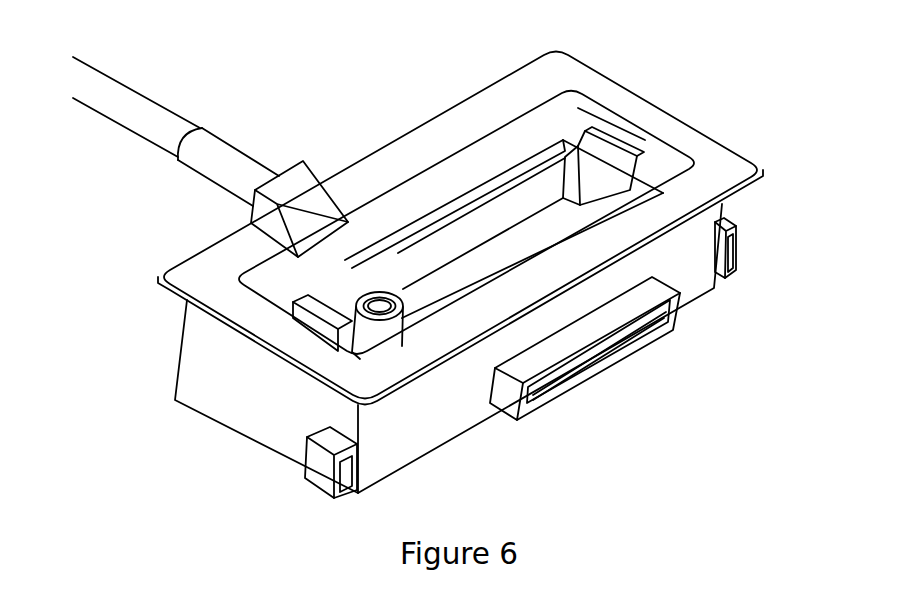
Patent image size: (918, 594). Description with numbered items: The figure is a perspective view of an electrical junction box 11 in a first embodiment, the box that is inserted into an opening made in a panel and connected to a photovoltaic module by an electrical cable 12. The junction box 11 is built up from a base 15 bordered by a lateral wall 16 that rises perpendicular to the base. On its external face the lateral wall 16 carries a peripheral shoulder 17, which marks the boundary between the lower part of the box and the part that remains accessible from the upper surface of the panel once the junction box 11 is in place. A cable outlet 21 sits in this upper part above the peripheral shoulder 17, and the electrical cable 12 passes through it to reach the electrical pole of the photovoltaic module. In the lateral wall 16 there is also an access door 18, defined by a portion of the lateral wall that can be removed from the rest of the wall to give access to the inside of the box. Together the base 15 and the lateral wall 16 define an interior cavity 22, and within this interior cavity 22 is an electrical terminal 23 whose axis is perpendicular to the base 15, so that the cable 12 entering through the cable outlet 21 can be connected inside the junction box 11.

The junction box 11 is at (668, 433).
The electrical cable 12 is at (134, 92).
The base 15 is at (216, 424).
The lateral wall 16 is at (410, 432).
The peripheral shoulder 17 is at (745, 168).
The access door 18 is at (543, 384).
The cable outlet 21 is at (312, 174).
The interior cavity 22 is at (562, 138).
The electrical terminal 23 is at (382, 293).